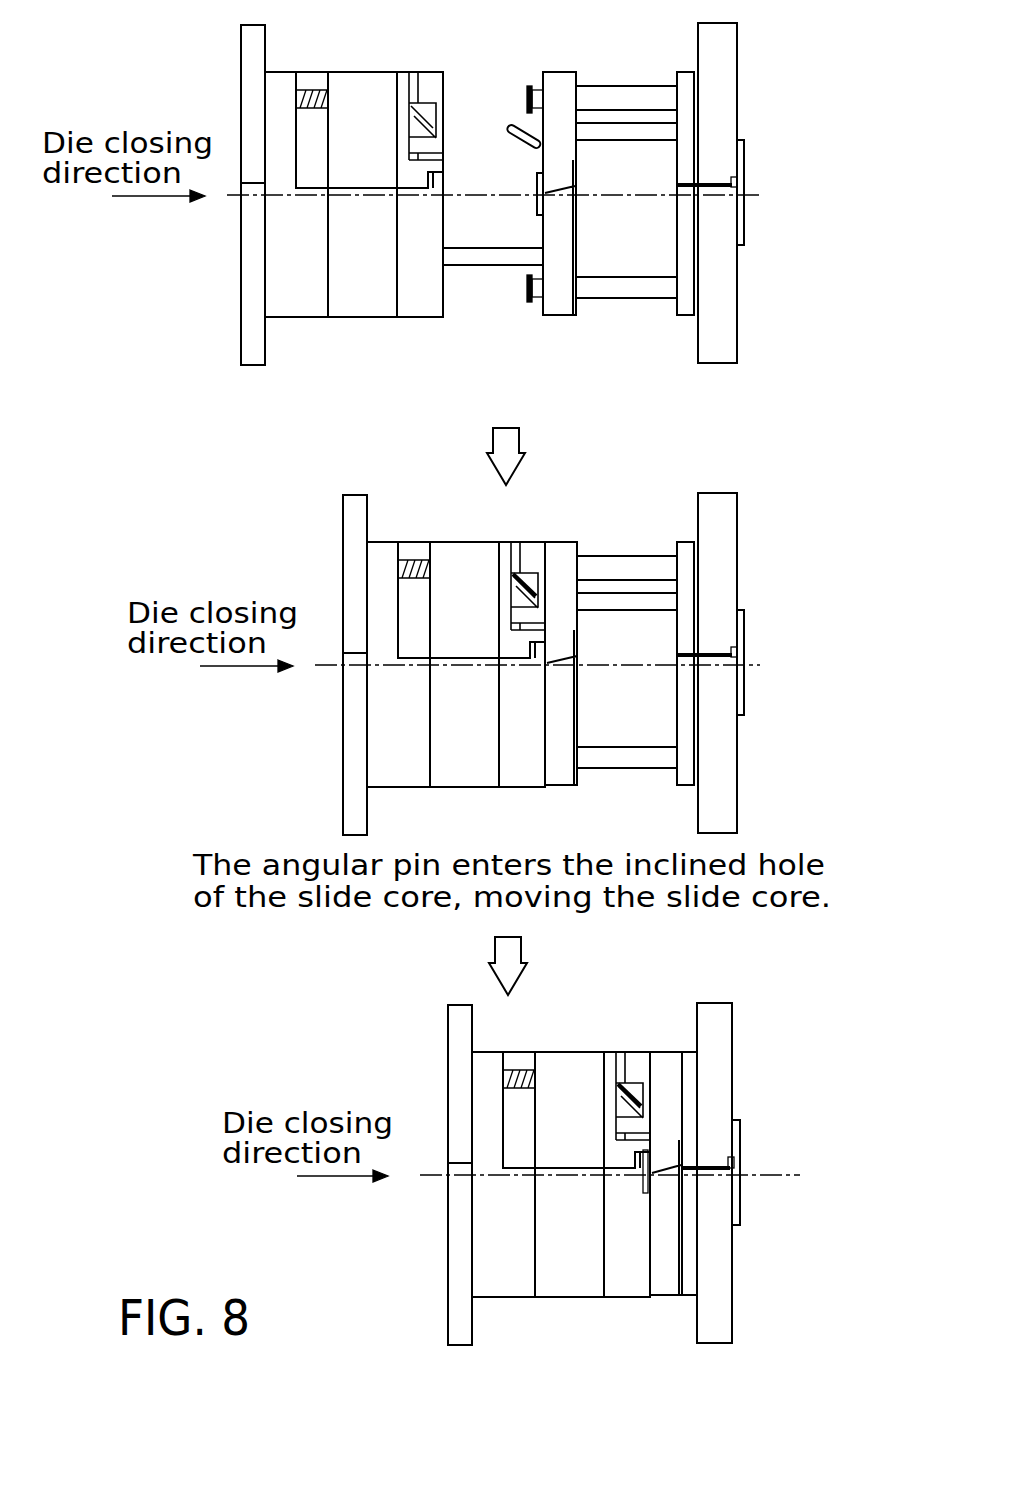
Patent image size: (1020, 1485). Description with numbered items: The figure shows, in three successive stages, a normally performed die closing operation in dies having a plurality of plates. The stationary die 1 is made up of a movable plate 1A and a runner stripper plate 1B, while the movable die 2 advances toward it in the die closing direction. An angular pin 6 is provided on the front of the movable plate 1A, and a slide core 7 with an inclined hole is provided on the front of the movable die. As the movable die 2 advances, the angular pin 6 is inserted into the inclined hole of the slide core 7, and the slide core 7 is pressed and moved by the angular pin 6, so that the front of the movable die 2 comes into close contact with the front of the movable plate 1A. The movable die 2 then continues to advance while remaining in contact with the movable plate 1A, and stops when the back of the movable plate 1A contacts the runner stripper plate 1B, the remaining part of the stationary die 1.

The stationary die 1 is at (612, 249).
The movable plate 1A is at (556, 318).
The runner stripper plate 1B is at (674, 228).
The movable die 2 is at (354, 202).
The angular pin 6 is at (514, 125).
The slide core 7 is at (430, 100).